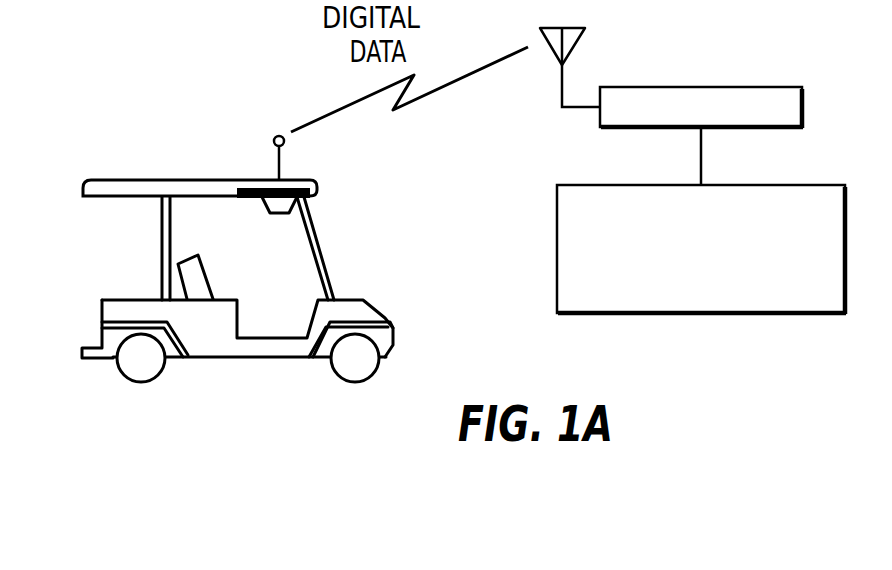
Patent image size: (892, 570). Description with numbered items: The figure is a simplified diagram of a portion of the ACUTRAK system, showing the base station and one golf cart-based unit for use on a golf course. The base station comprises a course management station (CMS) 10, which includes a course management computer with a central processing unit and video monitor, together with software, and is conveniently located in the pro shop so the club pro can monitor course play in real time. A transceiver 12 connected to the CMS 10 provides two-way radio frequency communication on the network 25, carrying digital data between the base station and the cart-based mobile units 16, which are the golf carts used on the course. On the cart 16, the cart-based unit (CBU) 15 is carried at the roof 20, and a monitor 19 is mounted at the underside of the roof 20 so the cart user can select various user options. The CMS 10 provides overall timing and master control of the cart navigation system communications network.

The course management station (CMS) 10 is at (557, 259).
The transceiver 12 is at (635, 88).
The cart-based unit (CBU) 15 is at (305, 181).
The golf cart 16 is at (120, 252).
The monitor 19 is at (268, 206).
The roof 20 is at (142, 181).
The network 25 is at (407, 118).